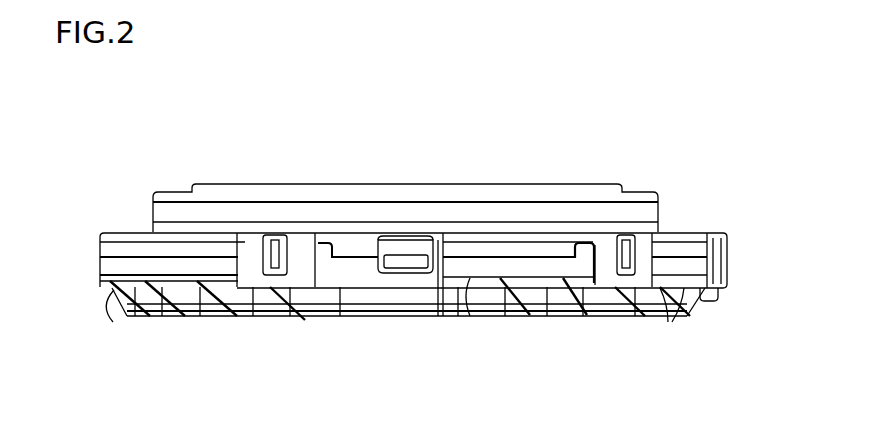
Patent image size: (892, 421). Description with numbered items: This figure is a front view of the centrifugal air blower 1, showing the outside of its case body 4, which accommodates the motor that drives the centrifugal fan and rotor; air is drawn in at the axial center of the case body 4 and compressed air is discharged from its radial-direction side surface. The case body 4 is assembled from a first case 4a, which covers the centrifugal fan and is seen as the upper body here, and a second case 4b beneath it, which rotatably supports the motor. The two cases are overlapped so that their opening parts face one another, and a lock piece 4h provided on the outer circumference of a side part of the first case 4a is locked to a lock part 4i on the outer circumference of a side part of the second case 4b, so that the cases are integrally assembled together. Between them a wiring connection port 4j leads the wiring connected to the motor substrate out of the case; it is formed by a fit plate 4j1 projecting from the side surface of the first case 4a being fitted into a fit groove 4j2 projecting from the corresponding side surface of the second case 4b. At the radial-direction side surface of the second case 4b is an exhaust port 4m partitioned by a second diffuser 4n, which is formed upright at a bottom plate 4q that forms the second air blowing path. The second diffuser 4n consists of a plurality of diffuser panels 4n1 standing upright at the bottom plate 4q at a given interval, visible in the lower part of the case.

The centrifugal air blower 1 is at (249, 176).
The case body 4 is at (783, 222).
The first case 4a is at (729, 238).
The second case 4b is at (712, 284).
The lock piece 4h is at (644, 243).
The lock part 4i is at (628, 268).
The wiring connection port 4j is at (410, 274).
The fit plate 4j1 is at (410, 243).
The fit groove 4j2 is at (392, 272).
The exhaust port 4m is at (162, 316).
The second diffuser 4n is at (580, 318).
The diffuser panels 4n1 is at (117, 318).
The bottom plate 4q is at (470, 300).